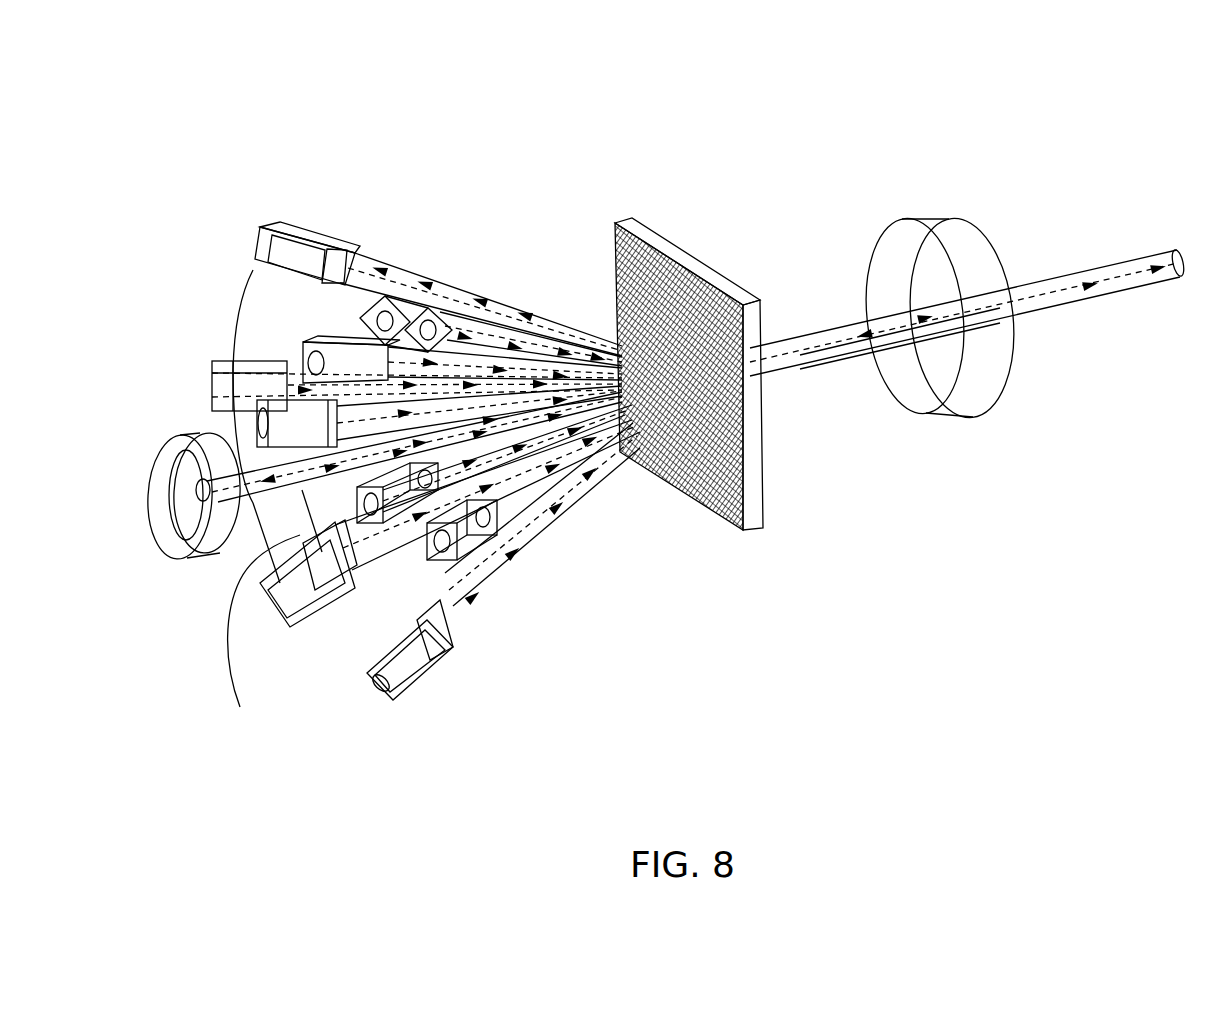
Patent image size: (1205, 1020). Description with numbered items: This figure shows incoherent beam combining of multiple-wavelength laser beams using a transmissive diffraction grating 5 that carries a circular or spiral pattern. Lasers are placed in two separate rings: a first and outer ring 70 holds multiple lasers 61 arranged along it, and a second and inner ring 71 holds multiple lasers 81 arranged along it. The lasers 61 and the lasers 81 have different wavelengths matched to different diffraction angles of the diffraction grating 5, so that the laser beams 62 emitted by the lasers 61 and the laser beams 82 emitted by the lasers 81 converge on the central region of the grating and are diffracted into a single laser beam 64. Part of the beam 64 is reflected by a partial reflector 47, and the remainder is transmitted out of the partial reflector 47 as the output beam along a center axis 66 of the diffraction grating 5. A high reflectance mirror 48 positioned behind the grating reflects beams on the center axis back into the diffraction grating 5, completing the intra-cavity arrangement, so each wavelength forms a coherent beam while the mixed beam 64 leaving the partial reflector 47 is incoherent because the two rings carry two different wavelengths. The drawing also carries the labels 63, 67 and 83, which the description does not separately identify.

The transmissive diffraction grating 5 is at (702, 276).
The partial reflector 47 is at (977, 386).
The high reflectance mirror 48 is at (210, 470).
The laser 61 is at (290, 225).
The laser beam 62 is at (450, 300).
The light beam 63 is at (523, 312).
The combined laser beam 64 is at (1133, 265).
The center axis 66 is at (1085, 272).
The light beam 67 is at (822, 345).
The outer ring 70 is at (240, 295).
The inner ring 71 is at (264, 639).
The laser 81 is at (553, 748).
The laser beam 82 is at (533, 530).
The light beam 83 is at (553, 508).